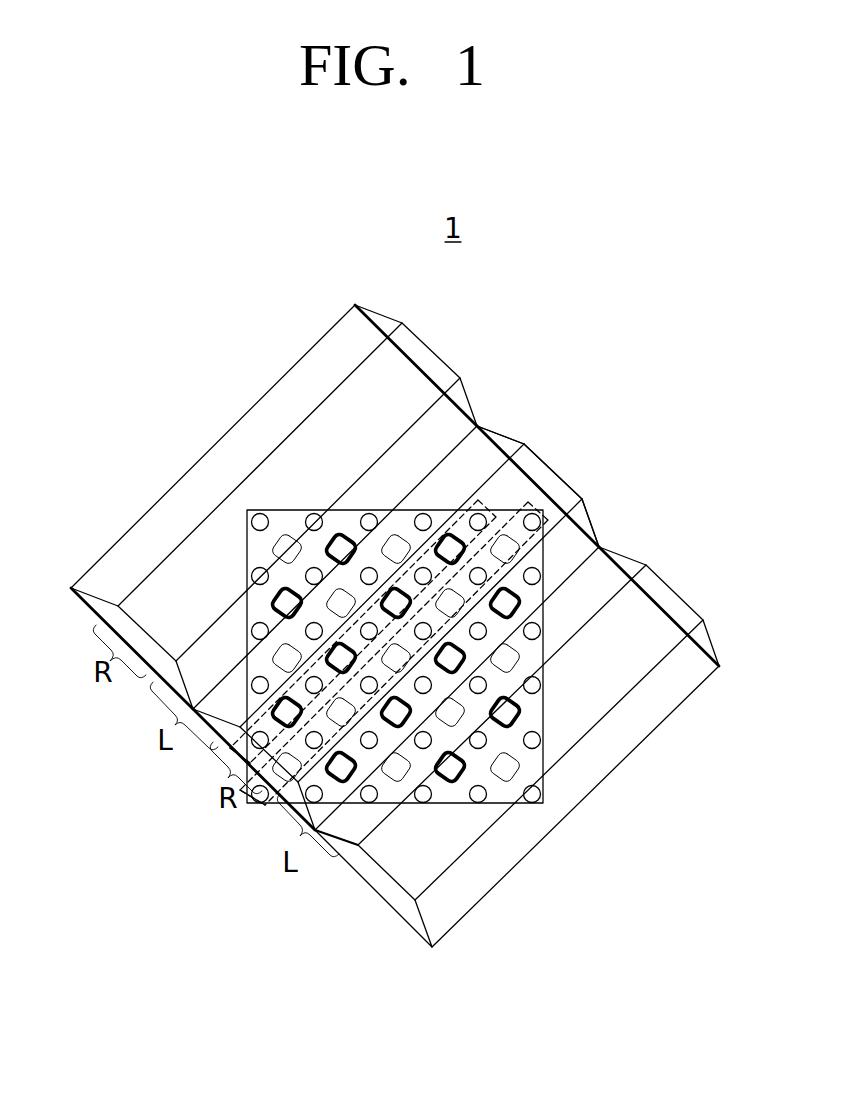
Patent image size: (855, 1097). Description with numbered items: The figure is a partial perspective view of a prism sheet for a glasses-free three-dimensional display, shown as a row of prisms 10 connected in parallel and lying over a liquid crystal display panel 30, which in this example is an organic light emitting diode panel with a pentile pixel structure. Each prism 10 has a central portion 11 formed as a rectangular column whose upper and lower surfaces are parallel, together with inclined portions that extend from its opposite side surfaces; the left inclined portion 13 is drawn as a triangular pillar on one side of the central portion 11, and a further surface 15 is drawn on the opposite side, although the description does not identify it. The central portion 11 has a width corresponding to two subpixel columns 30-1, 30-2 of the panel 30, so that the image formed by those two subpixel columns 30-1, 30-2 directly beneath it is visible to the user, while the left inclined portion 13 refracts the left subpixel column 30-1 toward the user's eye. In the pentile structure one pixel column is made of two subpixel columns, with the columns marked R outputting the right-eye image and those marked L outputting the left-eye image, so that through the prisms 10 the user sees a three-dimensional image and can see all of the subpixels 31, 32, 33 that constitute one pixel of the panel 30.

The prism 10 is at (437, 349).
The central portion 11 is at (559, 468).
The left inclined portion 13 is at (497, 437).
The second inclined surface of lens 15 is at (587, 522).
The liquid crystal display panel 30 is at (244, 808).
The subpixel column 30-1 is at (478, 500).
The subpixel column 30-2 is at (548, 520).
The subpixel 31 is at (257, 727).
The subpixel 32 is at (252, 738).
The subpixel 33 is at (314, 748).